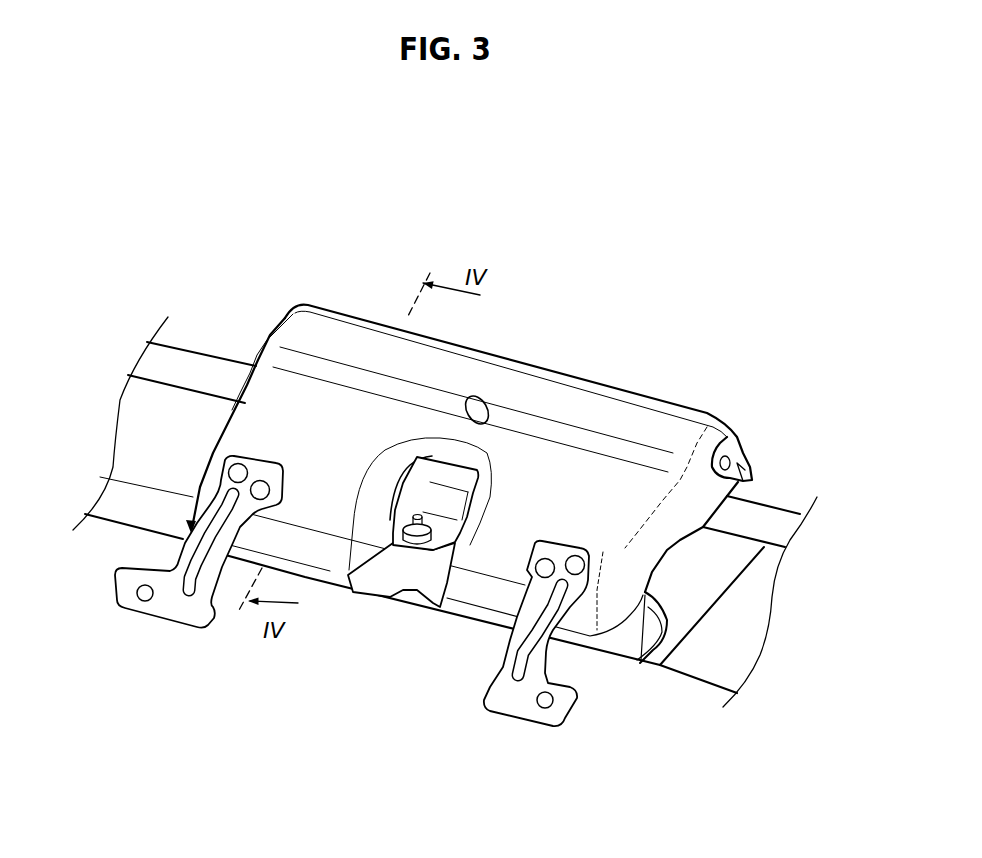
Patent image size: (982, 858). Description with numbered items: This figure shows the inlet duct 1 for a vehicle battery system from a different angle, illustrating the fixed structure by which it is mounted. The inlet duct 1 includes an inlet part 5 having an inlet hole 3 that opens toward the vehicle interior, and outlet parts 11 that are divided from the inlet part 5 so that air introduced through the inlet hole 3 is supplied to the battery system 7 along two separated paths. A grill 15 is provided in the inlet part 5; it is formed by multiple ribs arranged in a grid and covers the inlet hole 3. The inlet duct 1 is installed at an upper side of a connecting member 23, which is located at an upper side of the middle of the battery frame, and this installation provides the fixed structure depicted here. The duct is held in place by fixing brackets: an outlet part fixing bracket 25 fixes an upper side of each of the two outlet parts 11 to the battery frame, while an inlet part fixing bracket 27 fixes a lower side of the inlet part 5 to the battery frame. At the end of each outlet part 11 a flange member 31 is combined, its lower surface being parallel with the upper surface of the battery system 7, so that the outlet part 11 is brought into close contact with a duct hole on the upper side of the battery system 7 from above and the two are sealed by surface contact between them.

The inlet duct 1 is at (281, 392).
The inlet hole 3 is at (707, 392).
The inlet part 5 is at (576, 406).
The battery system 7 is at (732, 622).
The outlet parts 11 is at (210, 480).
The grill 15 is at (347, 313).
The connecting member 23 is at (375, 597).
The outlet part fixing bracket 25 is at (163, 610).
The inlet part fixing bracket 27 is at (448, 477).
The flange member 31 is at (630, 635).